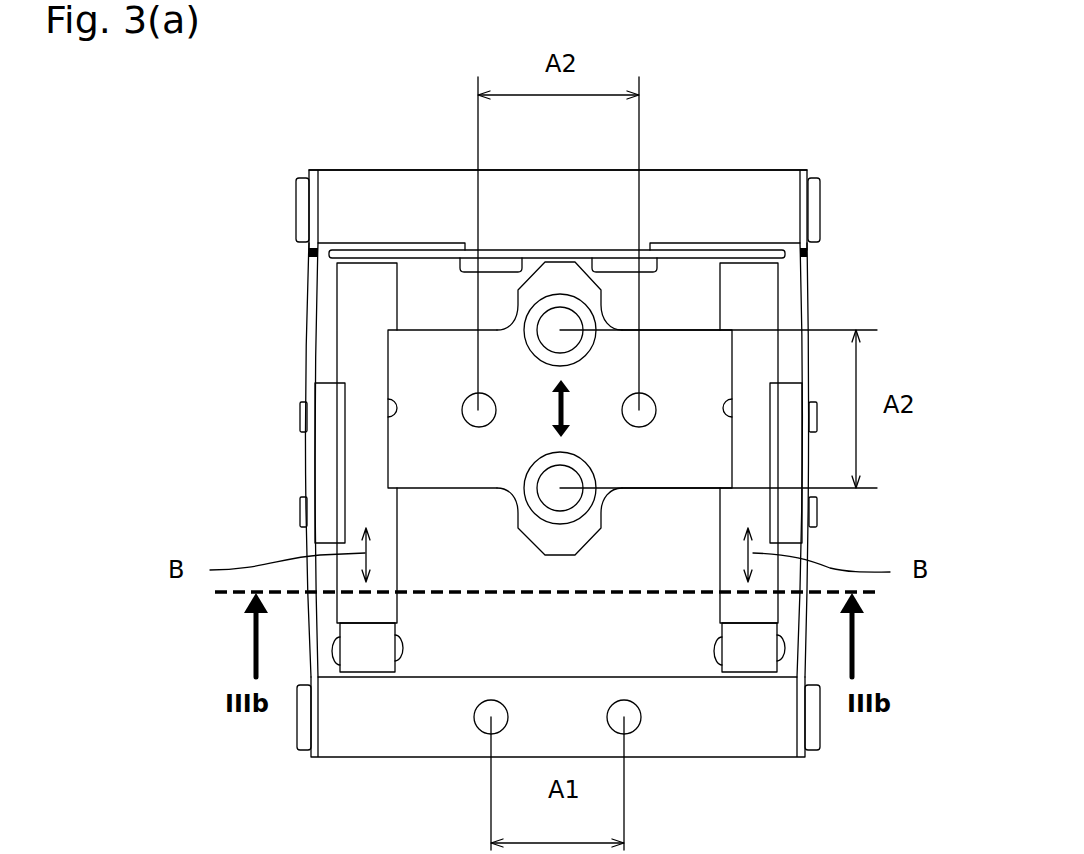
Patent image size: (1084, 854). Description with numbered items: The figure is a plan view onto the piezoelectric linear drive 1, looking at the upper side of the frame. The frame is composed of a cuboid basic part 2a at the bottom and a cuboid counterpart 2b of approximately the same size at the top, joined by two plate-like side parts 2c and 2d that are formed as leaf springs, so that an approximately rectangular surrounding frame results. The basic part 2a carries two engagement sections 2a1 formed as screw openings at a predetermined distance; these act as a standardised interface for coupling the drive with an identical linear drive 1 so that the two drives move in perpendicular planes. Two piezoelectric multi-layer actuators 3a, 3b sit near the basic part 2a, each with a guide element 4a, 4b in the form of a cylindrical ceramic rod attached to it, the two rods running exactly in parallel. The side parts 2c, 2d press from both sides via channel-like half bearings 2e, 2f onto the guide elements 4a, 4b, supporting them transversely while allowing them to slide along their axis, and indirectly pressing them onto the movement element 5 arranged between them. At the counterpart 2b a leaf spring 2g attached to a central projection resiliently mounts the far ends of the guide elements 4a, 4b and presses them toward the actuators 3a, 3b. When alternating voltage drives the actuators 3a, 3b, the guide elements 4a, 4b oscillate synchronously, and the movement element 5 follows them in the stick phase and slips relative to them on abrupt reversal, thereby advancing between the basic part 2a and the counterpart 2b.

The piezoelectric linear drive 1 is at (230, 176).
The basic part 2a is at (358, 708).
The engagement sections 2a1 is at (484, 730).
The counterpart 2b is at (460, 197).
The side part 2c is at (308, 537).
The side part 2d is at (800, 275).
The half bearing 2e is at (335, 459).
The half bearing 2f is at (787, 503).
The leaf spring 2g is at (685, 252).
The piezoelectric actuator 3a is at (368, 628).
The piezoelectric actuator 3b is at (753, 643).
The guide element 4a is at (357, 322).
The guide element 4b is at (753, 278).
The movement element 5 is at (693, 372).